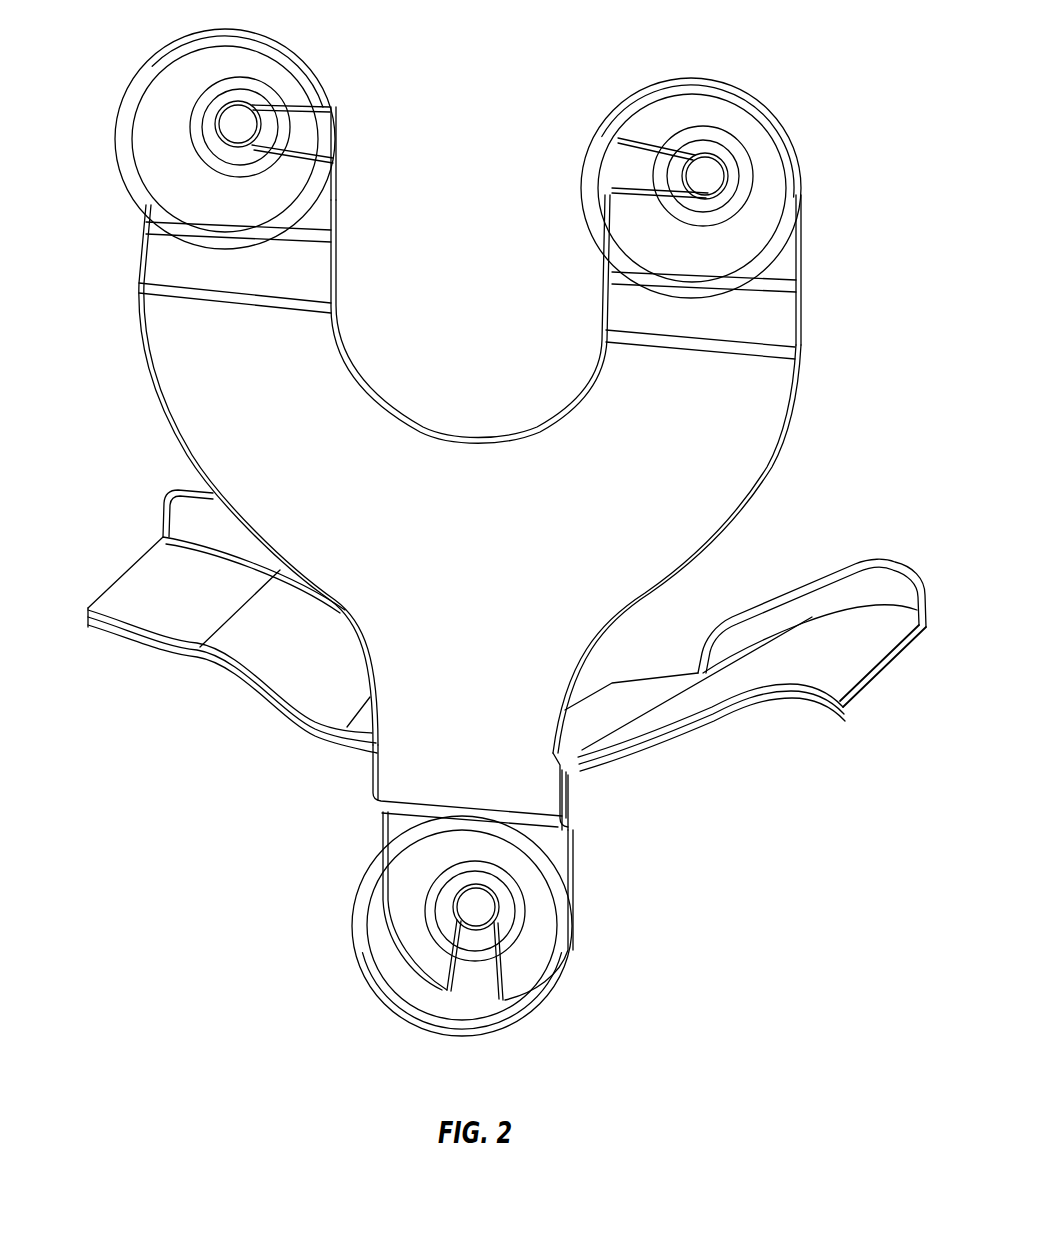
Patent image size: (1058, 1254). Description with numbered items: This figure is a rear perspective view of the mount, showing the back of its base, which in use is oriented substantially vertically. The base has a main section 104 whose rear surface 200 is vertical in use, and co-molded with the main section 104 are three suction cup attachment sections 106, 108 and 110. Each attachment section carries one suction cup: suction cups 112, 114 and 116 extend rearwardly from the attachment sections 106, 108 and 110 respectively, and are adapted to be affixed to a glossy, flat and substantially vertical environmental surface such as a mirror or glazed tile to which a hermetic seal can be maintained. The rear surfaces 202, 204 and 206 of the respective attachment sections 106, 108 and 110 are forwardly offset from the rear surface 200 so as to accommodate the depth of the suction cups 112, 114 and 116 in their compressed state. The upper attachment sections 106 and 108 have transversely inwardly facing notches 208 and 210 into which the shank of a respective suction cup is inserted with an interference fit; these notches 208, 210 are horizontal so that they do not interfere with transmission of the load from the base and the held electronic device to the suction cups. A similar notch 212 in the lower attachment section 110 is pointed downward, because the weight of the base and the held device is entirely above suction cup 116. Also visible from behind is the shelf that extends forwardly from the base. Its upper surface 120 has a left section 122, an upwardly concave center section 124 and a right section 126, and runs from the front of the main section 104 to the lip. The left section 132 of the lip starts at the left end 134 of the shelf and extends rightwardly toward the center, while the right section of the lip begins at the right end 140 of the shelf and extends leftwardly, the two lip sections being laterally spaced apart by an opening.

The rear surface 200 is at (498, 554).
The main section 104 is at (505, 539).
The suction cup attachment section 106 is at (790, 268).
The suction cup attachment section 108 is at (330, 218).
The suction cup attachment section 110 is at (555, 852).
The suction cup 112 is at (699, 211).
The suction cup 114 is at (229, 139).
The suction cup 116 is at (474, 925).
The rear surface 202 is at (797, 245).
The rear surface 204 is at (343, 190).
The rear surface 206 is at (583, 842).
The notch 208 is at (622, 168).
The notch 210 is at (325, 128).
The notch 212 is at (490, 1012).
The upper surface 120 is at (275, 670).
The left section 122 is at (172, 603).
The center section 124 is at (325, 705).
The right section 126 is at (800, 665).
The left section 132 is at (857, 578).
The left end 134 is at (855, 665).
The right end 140 is at (140, 578).